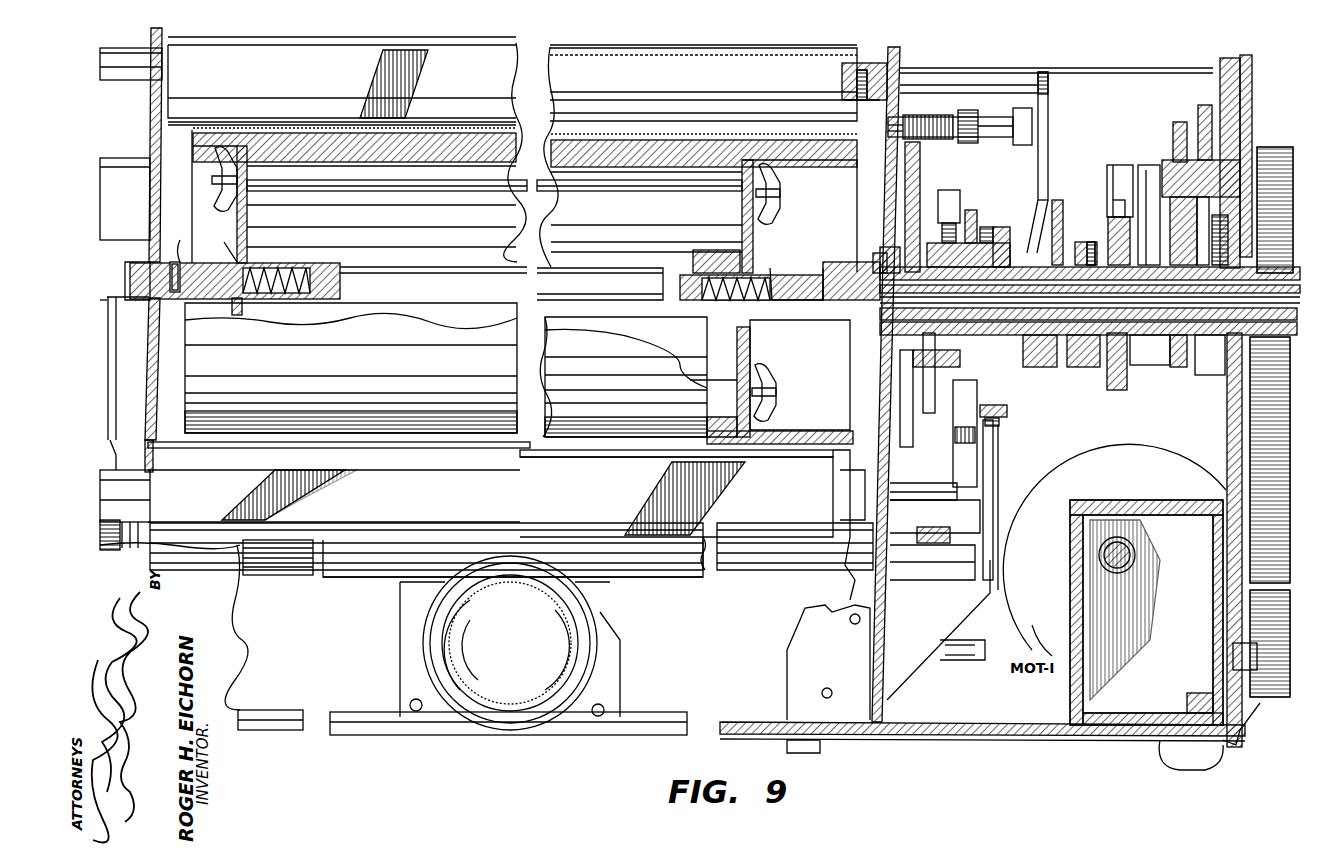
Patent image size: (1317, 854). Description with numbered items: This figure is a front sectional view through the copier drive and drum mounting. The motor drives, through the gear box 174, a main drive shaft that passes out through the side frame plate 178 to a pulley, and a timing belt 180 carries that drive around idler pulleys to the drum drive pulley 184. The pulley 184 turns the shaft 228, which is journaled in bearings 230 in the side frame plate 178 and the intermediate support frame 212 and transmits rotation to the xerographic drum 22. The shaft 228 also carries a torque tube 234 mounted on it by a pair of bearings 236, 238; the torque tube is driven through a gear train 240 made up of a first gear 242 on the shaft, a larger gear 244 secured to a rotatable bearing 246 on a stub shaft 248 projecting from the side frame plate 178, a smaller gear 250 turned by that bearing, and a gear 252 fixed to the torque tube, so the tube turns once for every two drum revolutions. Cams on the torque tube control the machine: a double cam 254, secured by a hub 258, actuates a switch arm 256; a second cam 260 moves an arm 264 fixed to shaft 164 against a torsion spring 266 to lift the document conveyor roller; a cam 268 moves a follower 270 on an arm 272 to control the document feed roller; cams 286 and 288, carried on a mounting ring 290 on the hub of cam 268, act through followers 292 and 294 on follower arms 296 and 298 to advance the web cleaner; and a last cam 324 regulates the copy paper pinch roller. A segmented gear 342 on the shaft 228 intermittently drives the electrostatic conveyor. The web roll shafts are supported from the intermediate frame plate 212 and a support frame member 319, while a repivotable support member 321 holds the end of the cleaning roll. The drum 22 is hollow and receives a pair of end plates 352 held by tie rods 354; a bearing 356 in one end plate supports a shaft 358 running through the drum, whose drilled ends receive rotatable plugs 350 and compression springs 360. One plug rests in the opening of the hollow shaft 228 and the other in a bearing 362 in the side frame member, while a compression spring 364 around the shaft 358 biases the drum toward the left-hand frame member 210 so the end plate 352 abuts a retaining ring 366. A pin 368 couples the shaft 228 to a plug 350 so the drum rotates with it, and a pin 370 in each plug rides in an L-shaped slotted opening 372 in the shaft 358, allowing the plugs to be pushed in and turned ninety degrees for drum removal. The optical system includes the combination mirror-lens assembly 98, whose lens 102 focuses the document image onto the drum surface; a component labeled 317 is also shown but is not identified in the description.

The xerographic drum 22 is at (190, 368).
The combination mirror-lens assembly 98 is at (529, 643).
The lens 102 is at (575, 648).
The shaft 164 is at (998, 116).
The gear box 174 is at (1070, 706).
The side frame plate 178 is at (1248, 730).
The timing belt 180 is at (1250, 488).
The drum drive pulley 184 is at (1295, 150).
The side frame 210 is at (150, 130).
The intermediate support frame 212 is at (885, 208).
The shaft 228 is at (1278, 314).
The bearings 230 is at (857, 378).
The torque tube 234 is at (1083, 362).
The bearing 236 is at (1180, 367).
The bearing 238 is at (1090, 289).
The gear train 240 is at (1158, 130).
The first gear 242 is at (1208, 362).
The larger gear 244 is at (1248, 118).
The rotatable bearing 246 is at (1205, 163).
The stub shaft 248 is at (1160, 170).
The smaller gear 250 is at (1195, 115).
The gear 252 is at (1150, 366).
The double cam 254 is at (1107, 390).
The switch arm 256 is at (1113, 205).
The hub 258 is at (1083, 245).
The second cam 260 is at (1056, 202).
The arm 264 is at (1035, 135).
The torsion spring 266 is at (950, 116).
The cam 268 is at (1000, 405).
The follower 270 is at (999, 422).
The arm 272 is at (993, 432).
The cam 286 is at (982, 227).
The cam 288 is at (946, 433).
The mounting ring 290 is at (968, 212).
The follower 292 is at (985, 384).
The follower 294 is at (955, 188).
The follower arm 296 is at (955, 460).
The follower arm 298 is at (938, 203).
The switch bracket 317 is at (922, 468).
The support frame member 319 is at (992, 598).
The repivotable support member 321 is at (148, 456).
The cam 324 is at (930, 390).
The segmented gear 342 is at (850, 415).
The rotatable plugs 350 is at (222, 304).
The end plates 352 is at (247, 226).
The tie rods 354 is at (338, 191).
The bearing 356 is at (720, 333).
The shaft 358 is at (626, 268).
The compression springs 360 is at (275, 266).
The bearing 362 is at (128, 264).
The compression spring 364 is at (770, 268).
The retaining ring 366 is at (216, 249).
The pin 368 is at (880, 290).
The pin 370 is at (812, 346).
The slotted openings 372 is at (215, 244).